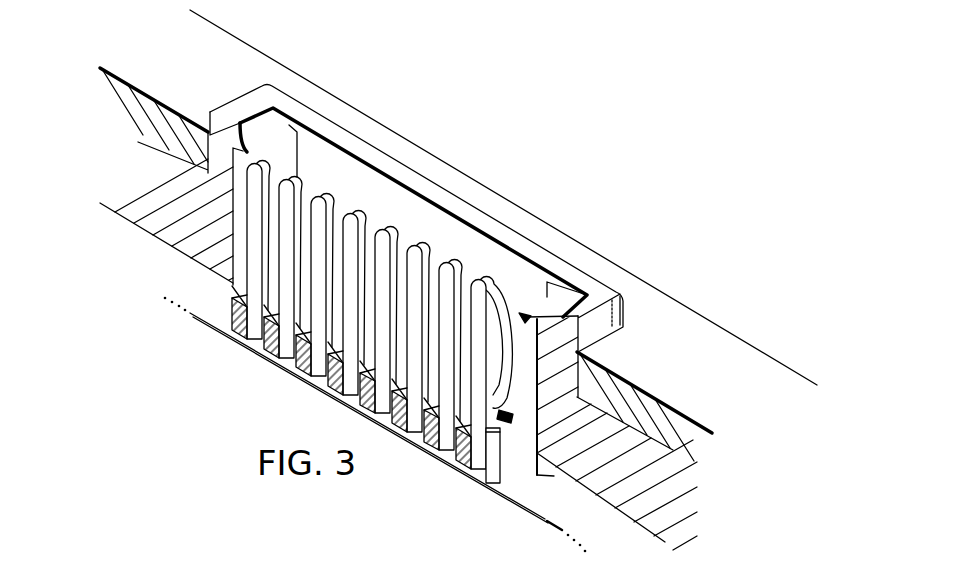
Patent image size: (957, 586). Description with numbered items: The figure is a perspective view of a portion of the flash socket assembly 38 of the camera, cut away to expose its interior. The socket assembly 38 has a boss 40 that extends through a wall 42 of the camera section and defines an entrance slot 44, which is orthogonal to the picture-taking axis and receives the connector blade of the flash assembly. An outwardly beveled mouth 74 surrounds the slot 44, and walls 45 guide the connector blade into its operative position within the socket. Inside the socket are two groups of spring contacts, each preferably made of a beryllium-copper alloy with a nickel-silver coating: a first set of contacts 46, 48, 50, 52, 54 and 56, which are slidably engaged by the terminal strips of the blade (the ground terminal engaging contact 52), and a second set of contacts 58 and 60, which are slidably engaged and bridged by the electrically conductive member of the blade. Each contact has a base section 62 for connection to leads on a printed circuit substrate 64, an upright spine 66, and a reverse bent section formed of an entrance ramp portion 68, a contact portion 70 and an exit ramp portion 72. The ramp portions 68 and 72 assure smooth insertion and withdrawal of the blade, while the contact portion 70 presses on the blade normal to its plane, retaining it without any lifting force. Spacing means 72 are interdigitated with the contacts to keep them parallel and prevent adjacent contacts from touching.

The flash socket assembly 38 is at (435, 241).
The boss 40 is at (626, 310).
The wall 42 is at (110, 108).
The entrance slot 44 is at (277, 151).
The walls 45 is at (292, 148).
The contact 46 is at (488, 391).
The contact 48 is at (455, 460).
The contact 50 is at (425, 445).
The contact 52 is at (382, 415).
The contact 54 is at (352, 405).
The contact 56 is at (316, 405).
The contact 58 is at (296, 375).
The contact 60 is at (256, 350).
The base section 62 is at (517, 472).
The printed circuit substrate 64 is at (530, 515).
The spine 66 is at (496, 488).
The entrance ramp portion 68 is at (500, 315).
The contact portion 70 is at (517, 345).
The exit ramp portion 72 is at (236, 338).
The outwardly beveled mouth 74 is at (258, 126).